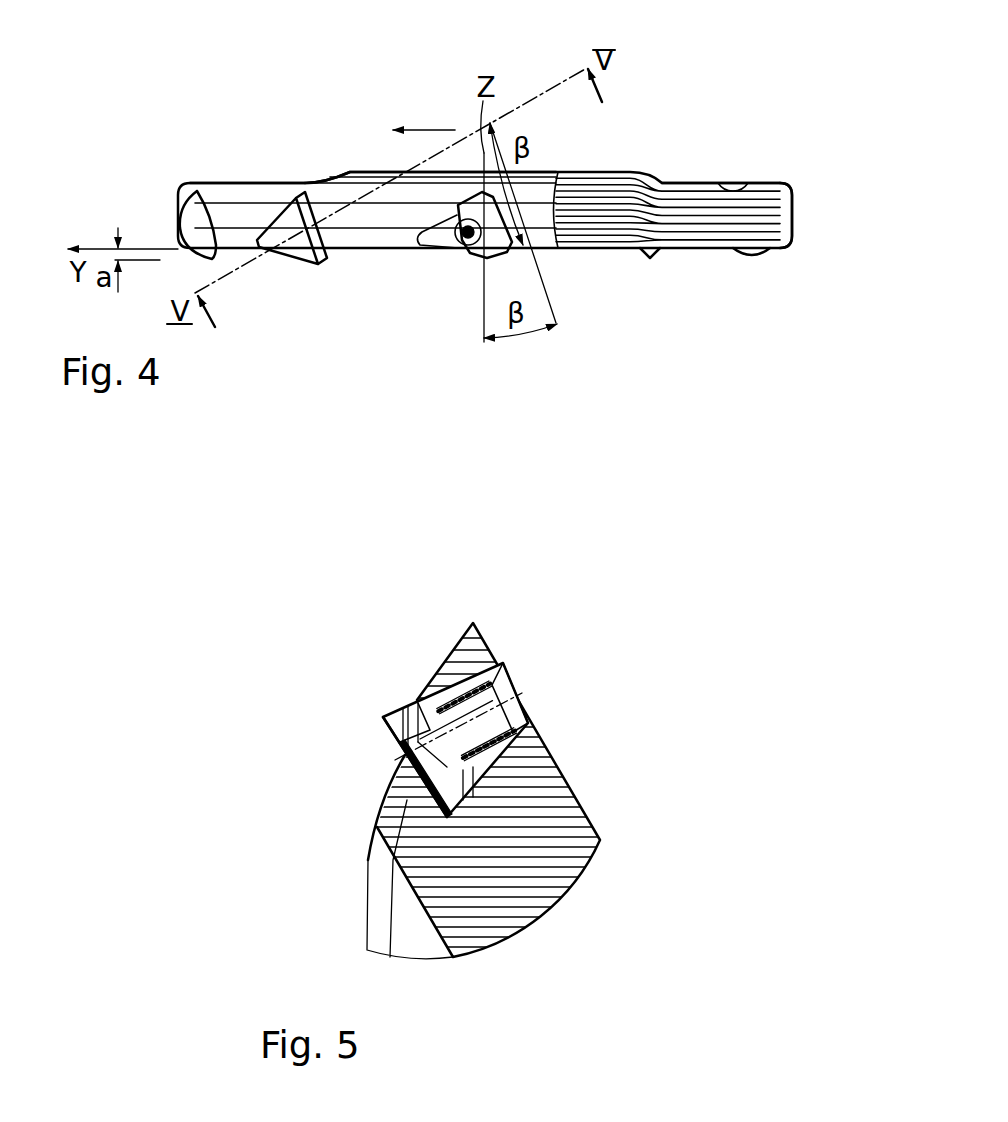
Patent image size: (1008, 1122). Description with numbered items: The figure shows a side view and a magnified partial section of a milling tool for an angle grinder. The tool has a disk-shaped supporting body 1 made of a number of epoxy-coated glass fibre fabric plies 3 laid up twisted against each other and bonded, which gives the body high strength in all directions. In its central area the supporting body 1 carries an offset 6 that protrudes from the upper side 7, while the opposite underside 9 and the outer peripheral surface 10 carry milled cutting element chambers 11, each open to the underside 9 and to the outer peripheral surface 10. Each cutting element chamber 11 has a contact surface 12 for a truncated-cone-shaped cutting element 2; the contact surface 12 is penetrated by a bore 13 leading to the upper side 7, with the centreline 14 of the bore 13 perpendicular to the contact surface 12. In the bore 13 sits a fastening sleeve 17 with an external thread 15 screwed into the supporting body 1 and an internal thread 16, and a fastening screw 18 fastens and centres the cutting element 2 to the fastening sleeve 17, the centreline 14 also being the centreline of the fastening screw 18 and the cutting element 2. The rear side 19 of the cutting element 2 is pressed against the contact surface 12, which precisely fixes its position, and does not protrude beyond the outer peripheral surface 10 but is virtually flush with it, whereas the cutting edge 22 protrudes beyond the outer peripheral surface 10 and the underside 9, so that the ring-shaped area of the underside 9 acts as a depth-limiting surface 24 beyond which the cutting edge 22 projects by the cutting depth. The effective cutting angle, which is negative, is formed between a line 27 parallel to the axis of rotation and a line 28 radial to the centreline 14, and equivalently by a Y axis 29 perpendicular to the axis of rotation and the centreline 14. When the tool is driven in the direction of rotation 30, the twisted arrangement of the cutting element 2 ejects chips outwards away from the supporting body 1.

In FIG. 4, the supporting body 1 is at (708, 116).
In FIG. 5, the supporting body 1 is at (492, 653).
In FIG. 4, the cutting element 2 is at (178, 220).
In FIG. 5, the cutting element 2 is at (387, 727).
In FIG. 4, the glass fibre fabric plies 3 is at (793, 243).
In FIG. 4, the offset 6 is at (615, 173).
In FIG. 4, the upper side 7 is at (250, 181).
In FIG. 4, the underside 9 is at (692, 253).
In FIG. 4, the outer peripheral surface 10 is at (794, 246).
In FIG. 5, the outer peripheral surface 10 is at (446, 657).
In FIG. 4, the cutting element chamber 11 is at (440, 247).
In FIG. 5, the cutting element chamber 11 is at (412, 765).
In FIG. 4, the contact surface 12 is at (288, 183).
In FIG. 5, the contact surface 12 is at (397, 818).
In FIG. 5, the bore 13 is at (497, 681).
In FIG. 4, the centreline 14 is at (360, 183).
In FIG. 5, the centreline 14 is at (512, 748).
In FIG. 5, the external thread 15 is at (482, 777).
In FIG. 5, the internal thread 16 is at (513, 698).
In FIG. 5, the fastening sleeve 17 is at (530, 721).
In FIG. 5, the fastening screw 18 is at (417, 745).
In FIG. 5, the rear side 19 is at (478, 784).
In FIG. 5, the cutting edge 22 is at (383, 717).
In FIG. 4, the depth-limiting surface 24 is at (728, 250).
In FIG. 4, the line parallel to axis of rotation 27 is at (483, 270).
In FIG. 4, the radial line 28 is at (545, 278).
In FIG. 4, the Y axis 29 is at (158, 252).
In FIG. 4, the direction of rotation 30 is at (426, 128).